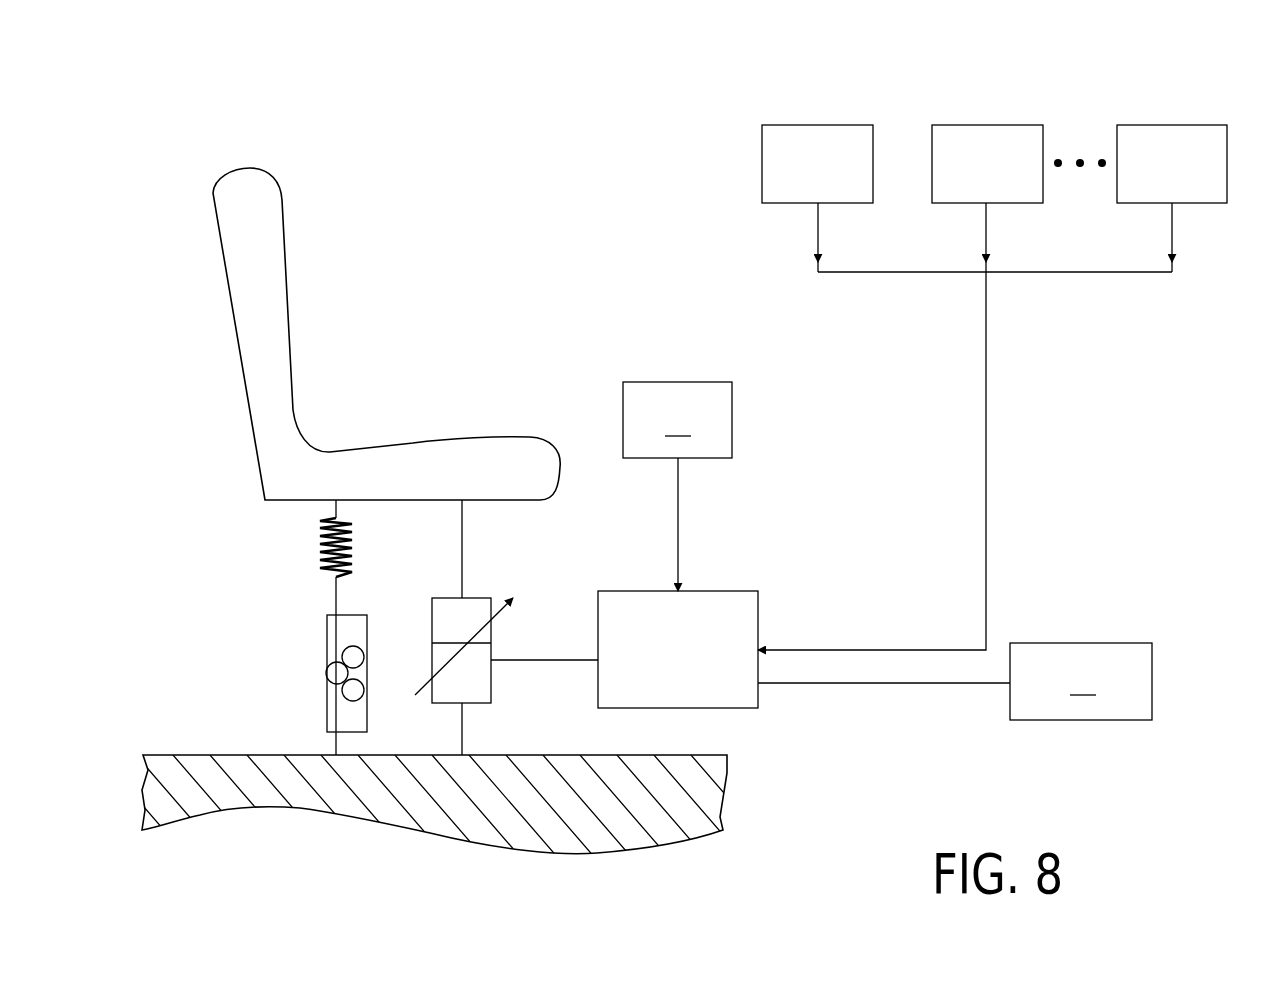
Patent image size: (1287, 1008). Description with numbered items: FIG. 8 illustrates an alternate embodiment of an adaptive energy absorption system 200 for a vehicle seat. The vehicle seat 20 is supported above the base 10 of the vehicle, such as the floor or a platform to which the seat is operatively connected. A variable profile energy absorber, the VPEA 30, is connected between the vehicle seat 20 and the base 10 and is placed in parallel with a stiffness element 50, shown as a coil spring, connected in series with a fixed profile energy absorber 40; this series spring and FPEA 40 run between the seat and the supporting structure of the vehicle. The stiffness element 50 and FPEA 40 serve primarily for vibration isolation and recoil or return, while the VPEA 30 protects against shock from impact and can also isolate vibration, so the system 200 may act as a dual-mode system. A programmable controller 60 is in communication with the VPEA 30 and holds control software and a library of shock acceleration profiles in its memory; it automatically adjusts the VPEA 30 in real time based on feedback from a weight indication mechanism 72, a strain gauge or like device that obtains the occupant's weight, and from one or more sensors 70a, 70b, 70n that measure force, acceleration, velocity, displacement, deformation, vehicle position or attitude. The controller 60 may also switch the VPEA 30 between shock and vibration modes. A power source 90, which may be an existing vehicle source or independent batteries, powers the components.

The adaptive energy absorption system 200 is at (498, 132).
The base 10 is at (675, 762).
The vehicle seat 20 is at (285, 277).
The VPEA 30 is at (477, 598).
The fixed profile energy absorber 40 is at (327, 702).
The stiffness element 50 is at (318, 543).
The programmable controller 60 is at (758, 608).
The sensor 70a is at (817, 125).
The sensor 70b is at (998, 125).
The sensor 70n is at (1177, 125).
The weight indication mechanism 72 is at (677, 486).
The power source 90 is at (955, 681).